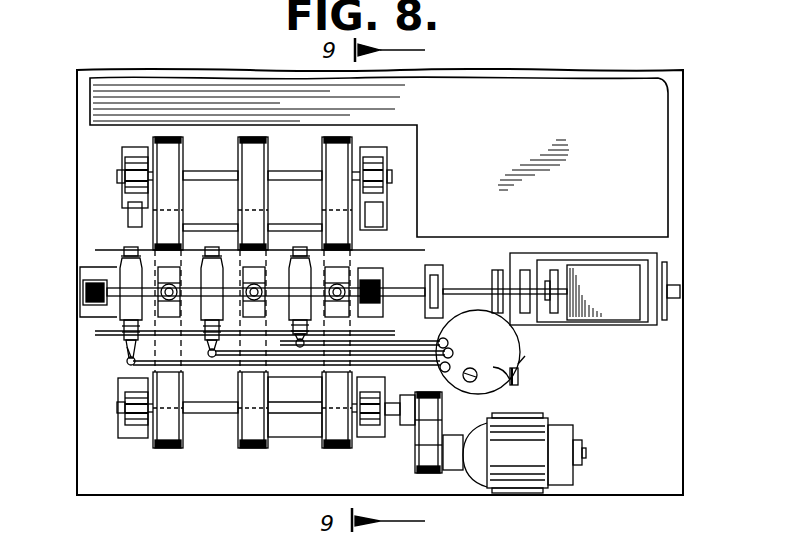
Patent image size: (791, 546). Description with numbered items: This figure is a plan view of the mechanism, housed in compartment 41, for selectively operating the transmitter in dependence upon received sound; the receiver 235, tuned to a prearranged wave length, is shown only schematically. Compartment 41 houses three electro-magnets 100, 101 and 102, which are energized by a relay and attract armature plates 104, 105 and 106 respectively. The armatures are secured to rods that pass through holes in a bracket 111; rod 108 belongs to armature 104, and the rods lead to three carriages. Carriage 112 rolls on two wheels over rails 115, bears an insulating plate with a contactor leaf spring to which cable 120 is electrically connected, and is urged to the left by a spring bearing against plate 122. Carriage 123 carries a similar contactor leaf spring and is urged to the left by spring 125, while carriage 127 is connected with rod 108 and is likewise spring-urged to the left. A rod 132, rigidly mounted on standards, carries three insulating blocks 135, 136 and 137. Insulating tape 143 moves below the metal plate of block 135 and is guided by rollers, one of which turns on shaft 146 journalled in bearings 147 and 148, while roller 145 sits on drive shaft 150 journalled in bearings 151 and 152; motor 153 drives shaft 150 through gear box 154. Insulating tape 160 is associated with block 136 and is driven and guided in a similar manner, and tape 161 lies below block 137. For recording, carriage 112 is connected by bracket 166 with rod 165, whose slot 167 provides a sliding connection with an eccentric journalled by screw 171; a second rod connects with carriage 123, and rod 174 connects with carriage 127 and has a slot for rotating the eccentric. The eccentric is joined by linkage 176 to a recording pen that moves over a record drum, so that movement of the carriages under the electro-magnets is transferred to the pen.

The receiver 235 is at (650, 140).
The bearing 148 is at (125, 168).
The insulating tape 160 is at (250, 158).
The shaft 146 is at (292, 172).
The bearing 147 is at (375, 167).
The insulating block 137 is at (167, 265).
The insulating tape 143 is at (333, 193).
The insulating block 136 is at (253, 266).
The tape 161 is at (150, 235).
The carriage 123 is at (203, 260).
The carriage 112 is at (287, 262).
The insulating block 135 is at (337, 266).
The rails 115 is at (383, 310).
The bracket 111 is at (440, 266).
The armature plate 106 is at (500, 269).
The armature plate 105 is at (525, 269).
The armature plate 104 is at (553, 269).
The rod 108 is at (468, 284).
The electro-magnet 100 is at (603, 292).
The electro-magnet 102 is at (528, 326).
The electro-magnet 101 is at (605, 326).
The carriage 127 is at (133, 277).
The rod 132 is at (113, 302).
The rod 165 is at (378, 340).
The plate 122 is at (283, 352).
The rod 174 is at (207, 364).
The bracket 166 is at (127, 347).
The slot 167 is at (468, 312).
The spring 125 is at (453, 356).
The linkage 176 is at (519, 366).
The cable 120 is at (496, 378).
The screw 171 is at (465, 383).
The roller 145 is at (318, 440).
The drive shaft 150 is at (293, 412).
The bearing 152 is at (128, 420).
The bearing 151 is at (377, 426).
The gear box 154 is at (420, 458).
The motor 153 is at (556, 428).
The compartment 41 is at (639, 399).